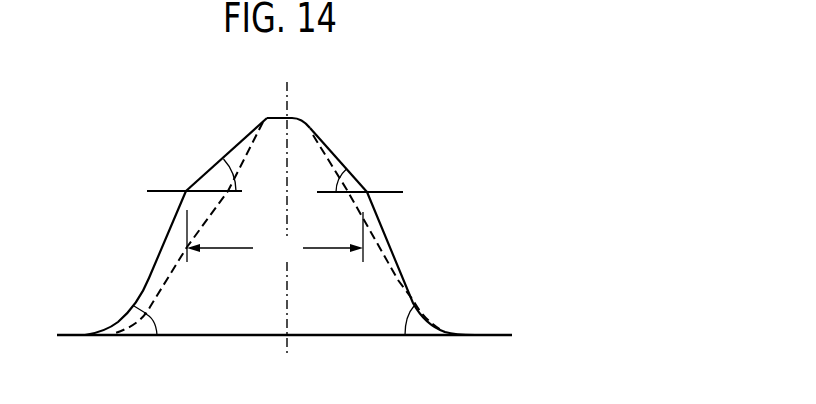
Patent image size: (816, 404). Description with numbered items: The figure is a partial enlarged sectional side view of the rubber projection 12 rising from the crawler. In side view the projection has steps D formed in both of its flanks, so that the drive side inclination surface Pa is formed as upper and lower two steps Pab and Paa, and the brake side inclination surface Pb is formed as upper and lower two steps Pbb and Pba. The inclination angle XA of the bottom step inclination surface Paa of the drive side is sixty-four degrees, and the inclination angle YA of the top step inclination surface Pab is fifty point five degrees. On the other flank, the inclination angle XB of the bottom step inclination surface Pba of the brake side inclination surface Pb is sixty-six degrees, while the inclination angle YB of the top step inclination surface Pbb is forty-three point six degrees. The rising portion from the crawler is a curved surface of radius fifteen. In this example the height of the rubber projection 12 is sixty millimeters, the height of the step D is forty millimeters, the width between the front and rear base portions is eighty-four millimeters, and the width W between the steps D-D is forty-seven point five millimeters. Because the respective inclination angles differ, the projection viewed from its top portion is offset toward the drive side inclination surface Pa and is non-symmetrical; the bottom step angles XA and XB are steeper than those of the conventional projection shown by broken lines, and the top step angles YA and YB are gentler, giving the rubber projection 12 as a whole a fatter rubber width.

The rubber projection 12 is at (271, 131).
The brake side inclination surface Pb is at (176, 213).
The top step inclination surface of the brake side Pbb is at (237, 149).
The bottom step inclination surface of the brake side Pba is at (161, 255).
The drive side inclination surface Pa is at (392, 224).
The top step inclination surface of the drive side Pab is at (330, 156).
The bottom step inclination surface of the drive side Paa is at (389, 246).
The step D is at (184, 191).
The width between the steps W is at (275, 237).
The inclination angle of the top step inclination surface Pbb YB is at (250, 175).
The inclination angle of the top step inclination surface Pab YA is at (325, 175).
The inclination angle of the bottom step inclination surface Pba XB is at (169, 317).
The inclination angle of the bottom step inclination surface Paa XA is at (392, 319).